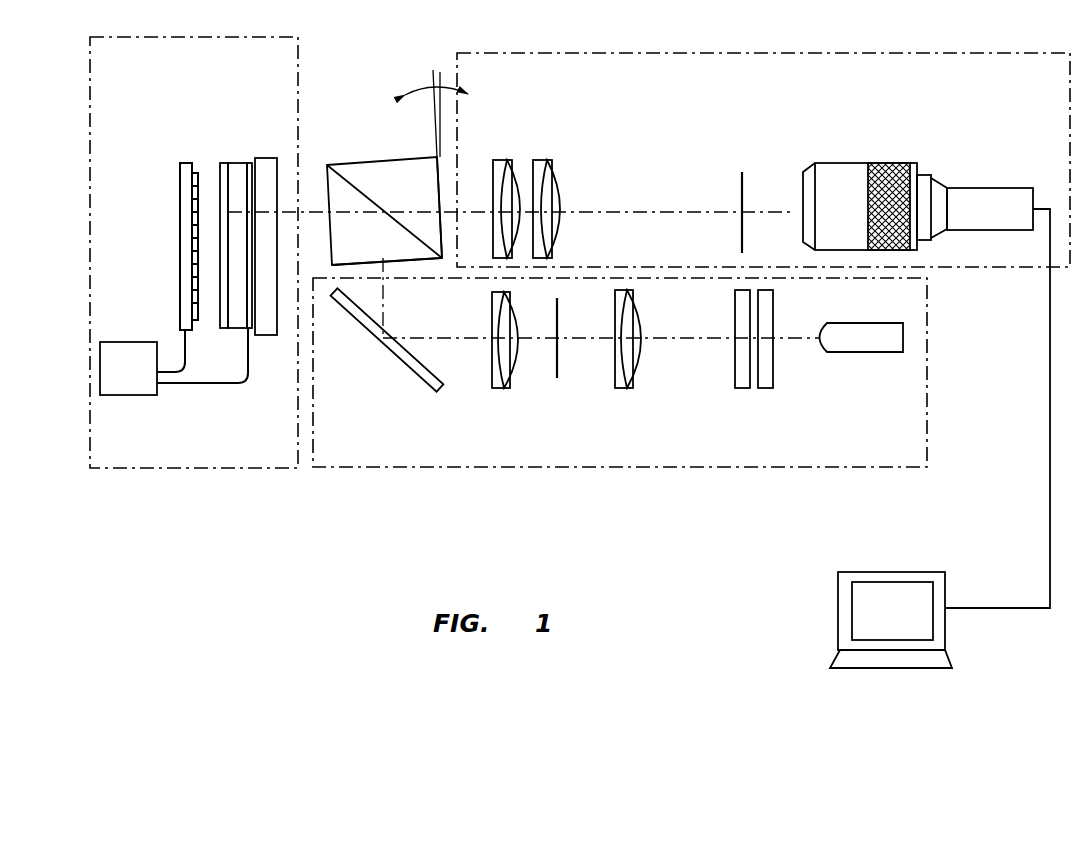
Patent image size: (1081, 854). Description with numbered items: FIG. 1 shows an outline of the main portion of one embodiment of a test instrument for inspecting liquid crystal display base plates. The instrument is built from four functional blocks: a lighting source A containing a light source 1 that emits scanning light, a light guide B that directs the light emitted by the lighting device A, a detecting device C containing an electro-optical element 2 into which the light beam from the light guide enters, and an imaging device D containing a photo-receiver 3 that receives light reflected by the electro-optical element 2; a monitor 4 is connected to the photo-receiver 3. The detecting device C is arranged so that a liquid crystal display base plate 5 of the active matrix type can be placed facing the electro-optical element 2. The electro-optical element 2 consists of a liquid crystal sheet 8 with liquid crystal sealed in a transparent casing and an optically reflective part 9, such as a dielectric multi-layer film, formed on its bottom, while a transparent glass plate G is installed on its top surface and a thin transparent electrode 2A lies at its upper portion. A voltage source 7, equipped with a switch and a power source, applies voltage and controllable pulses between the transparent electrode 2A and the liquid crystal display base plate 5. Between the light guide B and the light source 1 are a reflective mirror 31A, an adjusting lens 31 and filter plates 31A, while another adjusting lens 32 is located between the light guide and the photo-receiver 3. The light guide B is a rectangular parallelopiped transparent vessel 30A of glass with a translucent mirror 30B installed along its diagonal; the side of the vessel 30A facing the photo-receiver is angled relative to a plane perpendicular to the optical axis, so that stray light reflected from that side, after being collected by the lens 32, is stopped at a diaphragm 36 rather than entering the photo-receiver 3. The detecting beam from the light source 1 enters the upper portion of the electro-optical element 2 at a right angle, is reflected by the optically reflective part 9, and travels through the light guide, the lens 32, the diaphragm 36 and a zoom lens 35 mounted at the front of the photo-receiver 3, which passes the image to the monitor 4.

The light source 1 is at (857, 355).
The electro-optical element 2 is at (238, 160).
The thin transparent electrode 2A is at (250, 163).
The photo-receiver 3 is at (1013, 188).
The monitor 4 is at (838, 608).
The liquid crystal display base plate 5 is at (185, 160).
The voltage source 7 is at (122, 387).
The liquid crystal sheet 8 is at (237, 330).
The optically reflective part 9 is at (222, 163).
The transparent vessel 30A is at (440, 138).
The translucent mirror 30B is at (350, 183).
The adjusting lens 31 is at (503, 392).
The reflective mirror 31A is at (398, 368).
The adjusting lens 32 is at (512, 160).
The zoom lens 35 is at (868, 163).
The diaphragm 36 is at (742, 172).
The lighting source A is at (532, 470).
The light guide B is at (408, 127).
The detecting device C is at (197, 472).
The imaging device D is at (678, 52).
The transparent glass plate G is at (265, 158).